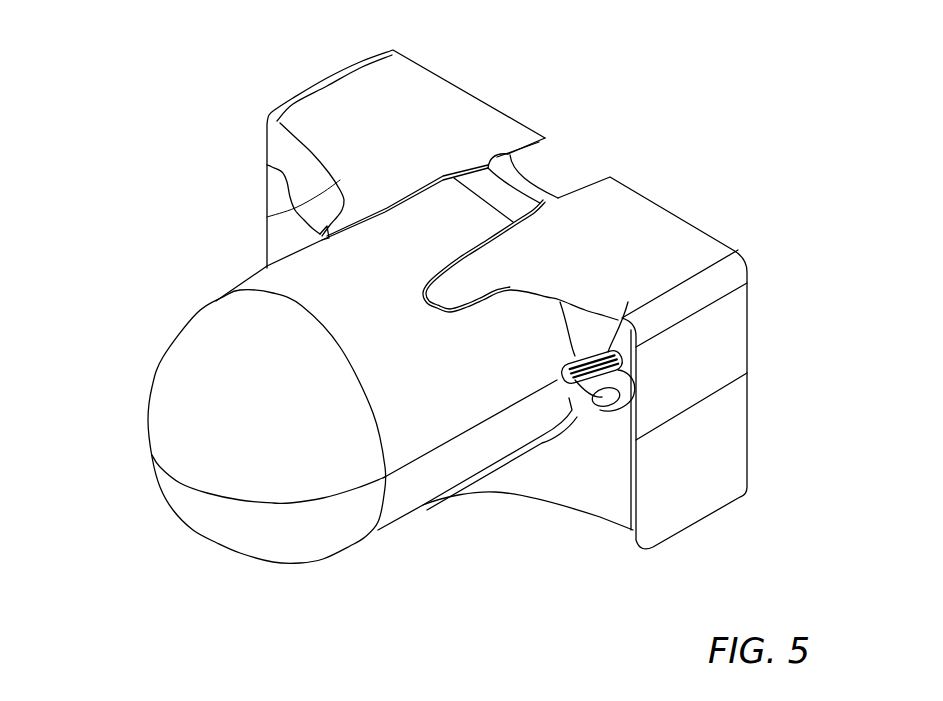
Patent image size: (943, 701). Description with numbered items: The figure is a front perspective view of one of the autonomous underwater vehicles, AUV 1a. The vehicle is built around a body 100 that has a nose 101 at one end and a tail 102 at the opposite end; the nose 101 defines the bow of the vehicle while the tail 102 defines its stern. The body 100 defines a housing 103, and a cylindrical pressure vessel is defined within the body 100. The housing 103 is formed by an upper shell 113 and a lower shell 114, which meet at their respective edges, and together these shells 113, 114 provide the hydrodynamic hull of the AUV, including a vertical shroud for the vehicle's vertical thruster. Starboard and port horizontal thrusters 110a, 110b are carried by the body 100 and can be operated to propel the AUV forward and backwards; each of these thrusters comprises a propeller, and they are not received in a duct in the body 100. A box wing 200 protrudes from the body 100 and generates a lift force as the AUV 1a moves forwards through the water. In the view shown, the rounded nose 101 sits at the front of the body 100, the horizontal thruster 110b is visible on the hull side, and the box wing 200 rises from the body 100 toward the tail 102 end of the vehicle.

The AUV 1a is at (688, 62).
The body 100 is at (379, 530).
The nose 101 is at (152, 455).
The tail 102 is at (520, 174).
The housing 103 is at (220, 306).
The starboard horizontal thruster 110a is at (267, 165).
The port horizontal thruster 110b is at (610, 407).
The upper shell 113 is at (417, 423).
The lower shell 114 is at (463, 480).
The box wing 200 is at (660, 206).